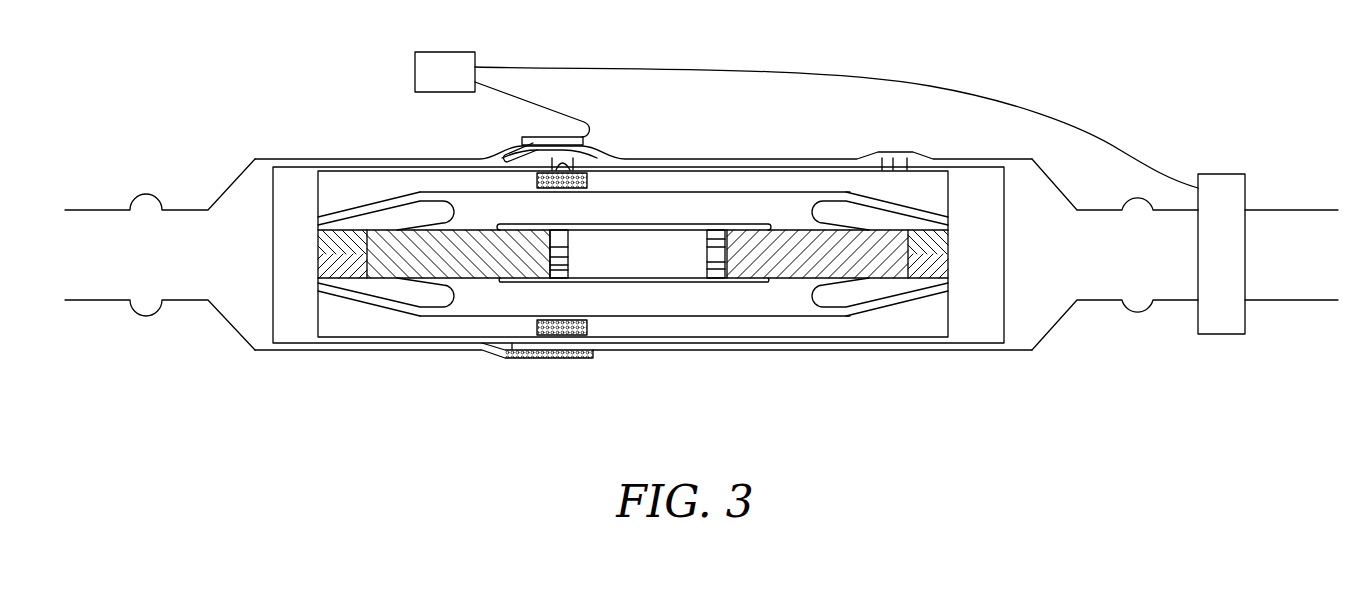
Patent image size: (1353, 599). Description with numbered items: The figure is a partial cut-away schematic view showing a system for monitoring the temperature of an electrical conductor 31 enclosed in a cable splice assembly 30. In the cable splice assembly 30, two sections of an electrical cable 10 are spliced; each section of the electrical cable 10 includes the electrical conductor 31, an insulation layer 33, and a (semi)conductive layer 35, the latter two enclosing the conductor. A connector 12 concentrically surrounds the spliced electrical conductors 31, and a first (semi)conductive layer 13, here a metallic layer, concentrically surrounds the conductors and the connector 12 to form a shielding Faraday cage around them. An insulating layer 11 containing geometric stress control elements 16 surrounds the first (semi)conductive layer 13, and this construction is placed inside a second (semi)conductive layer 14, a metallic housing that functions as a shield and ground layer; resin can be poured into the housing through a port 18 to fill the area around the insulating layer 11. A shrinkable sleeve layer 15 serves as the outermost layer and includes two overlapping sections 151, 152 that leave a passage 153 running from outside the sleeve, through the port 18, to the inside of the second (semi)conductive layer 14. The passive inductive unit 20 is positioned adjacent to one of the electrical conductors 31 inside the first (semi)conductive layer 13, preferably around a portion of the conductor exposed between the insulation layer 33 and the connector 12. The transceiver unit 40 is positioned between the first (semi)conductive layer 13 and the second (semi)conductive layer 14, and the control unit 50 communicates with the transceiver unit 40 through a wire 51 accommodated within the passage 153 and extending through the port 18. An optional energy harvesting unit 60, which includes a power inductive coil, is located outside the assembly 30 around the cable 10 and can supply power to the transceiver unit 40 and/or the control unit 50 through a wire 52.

The electrical cable 10 is at (1169, 308).
The insulating layer 11 is at (802, 295).
The connector 12 is at (624, 260).
The first (semi)conductive layer 13 is at (675, 282).
The second (semi)conductive layer 14 is at (977, 323).
The shrinkable sleeve layer 15 is at (1045, 318).
The geometric stress control elements 16 is at (413, 220).
The port 18 is at (894, 162).
The passive inductive unit 20 is at (557, 247).
The cable splice assembly 30 is at (444, 370).
The electrical conductor 31 is at (715, 255).
The insulation layer 33 is at (410, 250).
The (semi)conductive layer 35 is at (340, 250).
The transceiver unit 40 is at (560, 327).
The control unit 50 is at (415, 70).
The wire 51 is at (500, 91).
The wire 52 is at (701, 82).
The energy harvesting unit 60 is at (1220, 192).
The overlapping section 151 is at (492, 153).
The overlapping section 152 is at (597, 153).
The passage 153 is at (520, 147).